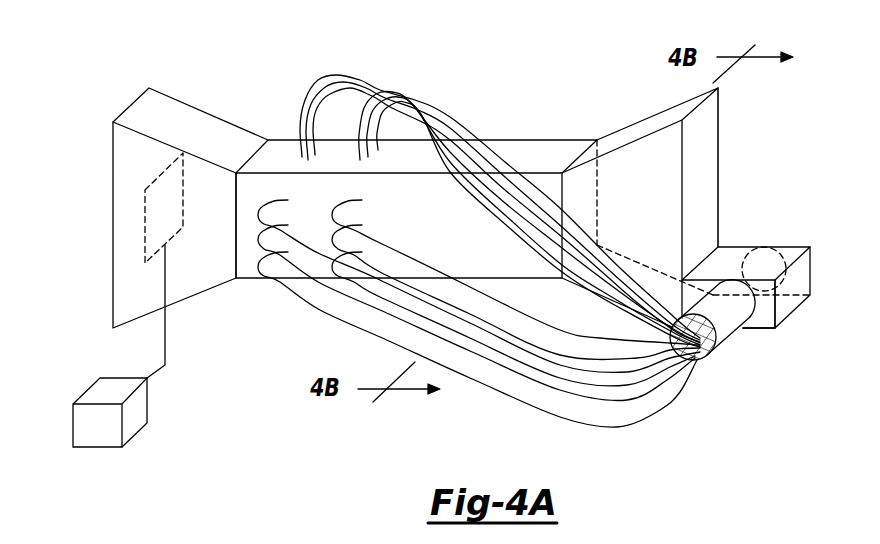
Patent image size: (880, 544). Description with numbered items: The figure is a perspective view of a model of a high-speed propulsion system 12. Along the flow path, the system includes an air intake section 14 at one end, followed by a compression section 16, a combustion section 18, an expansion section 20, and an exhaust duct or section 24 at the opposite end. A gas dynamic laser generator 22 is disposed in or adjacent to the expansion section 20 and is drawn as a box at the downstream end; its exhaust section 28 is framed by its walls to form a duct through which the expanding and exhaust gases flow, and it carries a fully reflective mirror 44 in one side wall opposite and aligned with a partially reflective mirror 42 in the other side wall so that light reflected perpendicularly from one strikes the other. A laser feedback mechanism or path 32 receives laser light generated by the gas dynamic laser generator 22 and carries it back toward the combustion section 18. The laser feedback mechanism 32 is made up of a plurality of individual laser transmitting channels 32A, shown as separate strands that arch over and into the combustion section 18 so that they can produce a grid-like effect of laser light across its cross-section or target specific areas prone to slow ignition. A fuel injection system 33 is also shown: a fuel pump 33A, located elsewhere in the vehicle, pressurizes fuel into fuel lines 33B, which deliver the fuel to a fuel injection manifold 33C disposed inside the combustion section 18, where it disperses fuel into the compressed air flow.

The high-speed propulsion system 12 is at (558, 92).
The air intake section 14 is at (113, 148).
The compression section 16 is at (208, 123).
The combustion section 18 is at (505, 140).
The expansion section 20 is at (640, 128).
The exhaust duct or section 24 is at (718, 137).
The gas dynamic laser generator 22 is at (813, 265).
The exhaust section 28 is at (788, 303).
The fully reflective mirror 44 is at (778, 249).
The partially reflective mirror 42 is at (758, 302).
The laser feedback mechanism or path 32 is at (700, 363).
The laser transmitting channels 32A is at (315, 98).
The fuel injection system 33 is at (105, 351).
The fuel pump 33A is at (138, 408).
The fuel lines 33B is at (164, 365).
The fuel injection manifold 33C is at (145, 203).